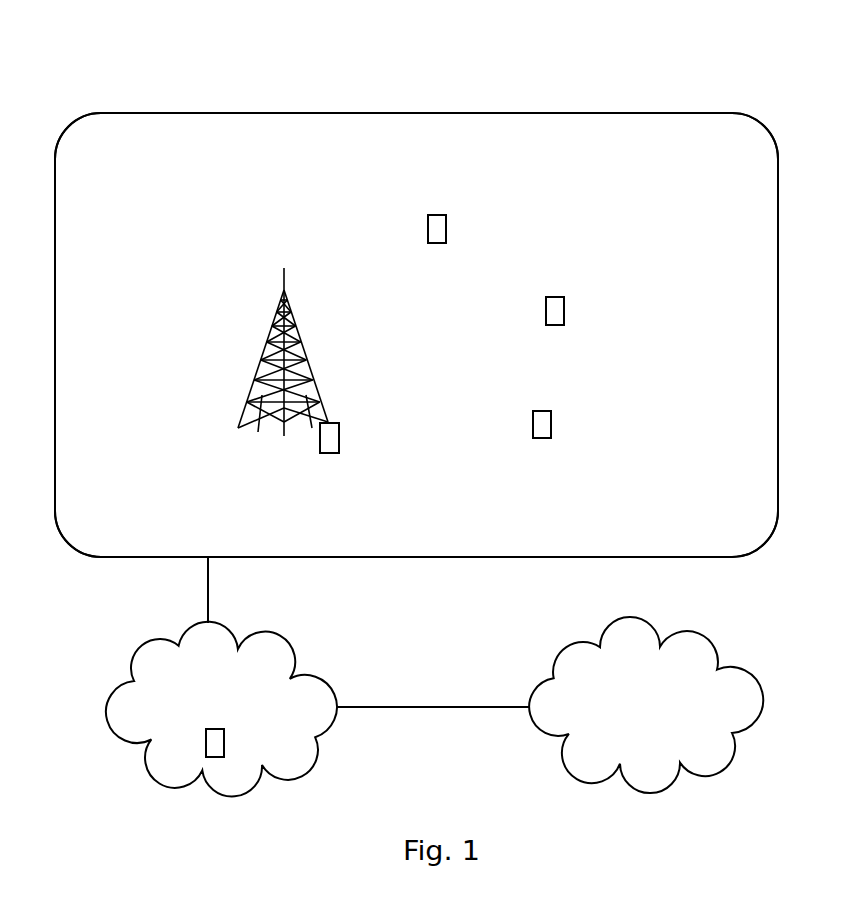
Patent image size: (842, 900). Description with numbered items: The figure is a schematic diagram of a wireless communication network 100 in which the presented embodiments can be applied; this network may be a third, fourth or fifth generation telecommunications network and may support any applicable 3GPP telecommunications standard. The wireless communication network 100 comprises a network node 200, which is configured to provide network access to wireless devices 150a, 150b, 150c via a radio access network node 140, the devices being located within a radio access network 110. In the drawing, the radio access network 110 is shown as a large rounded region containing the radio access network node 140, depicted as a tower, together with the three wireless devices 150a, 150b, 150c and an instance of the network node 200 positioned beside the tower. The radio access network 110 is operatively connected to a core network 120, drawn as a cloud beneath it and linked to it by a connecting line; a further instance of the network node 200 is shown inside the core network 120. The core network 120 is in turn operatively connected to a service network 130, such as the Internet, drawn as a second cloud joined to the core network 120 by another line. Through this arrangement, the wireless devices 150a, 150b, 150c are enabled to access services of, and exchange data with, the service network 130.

The wireless communication network 100 is at (130, 70).
The radio access network 110 is at (743, 156).
The core network 120 is at (212, 706).
The service network 130 is at (673, 720).
The radio access network node 140 is at (283, 282).
The wireless device 150a is at (446, 224).
The wireless device 150b is at (564, 306).
The wireless device 150c is at (551, 419).
The network node 200 is at (339, 436).